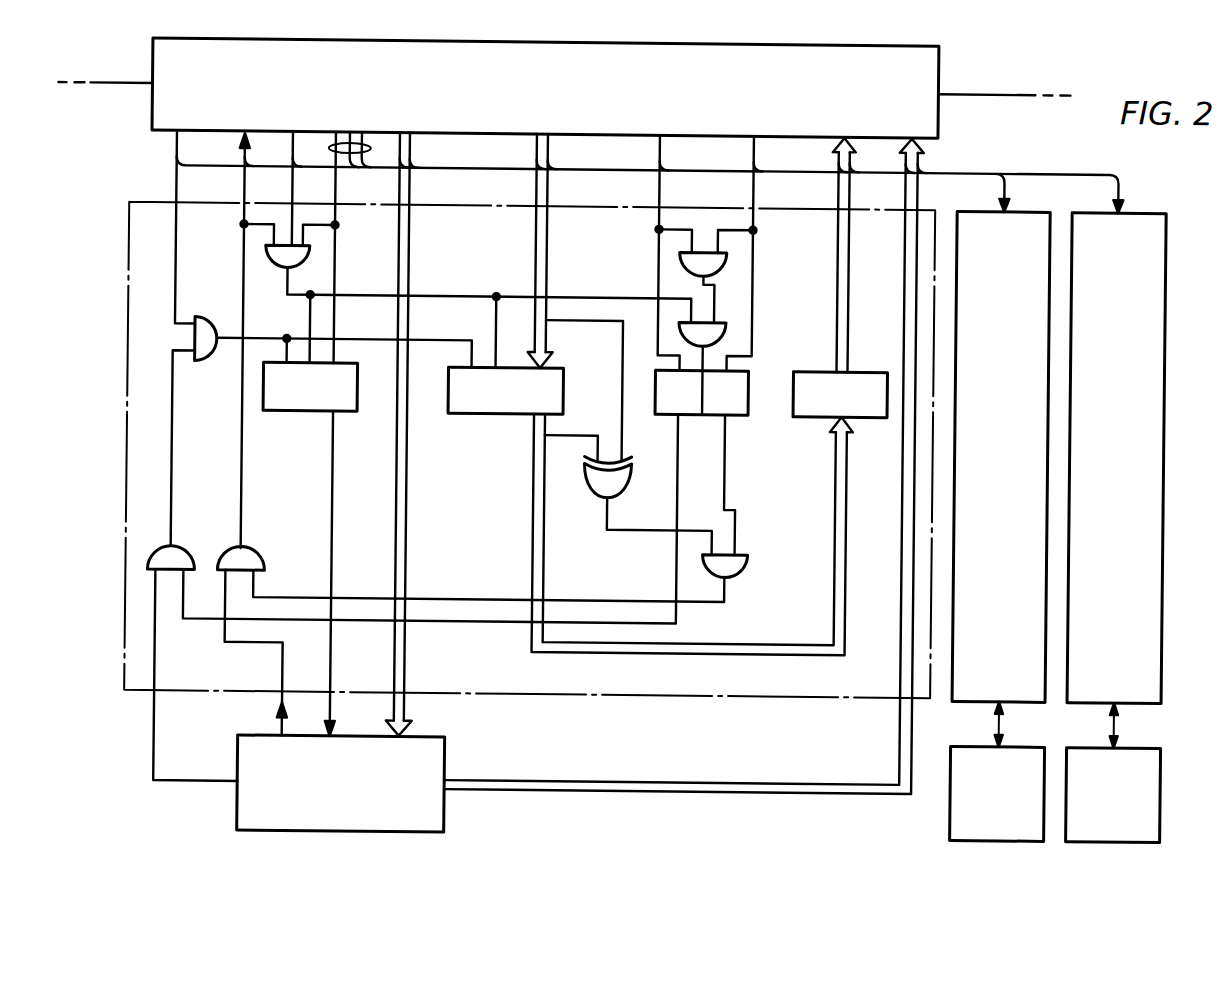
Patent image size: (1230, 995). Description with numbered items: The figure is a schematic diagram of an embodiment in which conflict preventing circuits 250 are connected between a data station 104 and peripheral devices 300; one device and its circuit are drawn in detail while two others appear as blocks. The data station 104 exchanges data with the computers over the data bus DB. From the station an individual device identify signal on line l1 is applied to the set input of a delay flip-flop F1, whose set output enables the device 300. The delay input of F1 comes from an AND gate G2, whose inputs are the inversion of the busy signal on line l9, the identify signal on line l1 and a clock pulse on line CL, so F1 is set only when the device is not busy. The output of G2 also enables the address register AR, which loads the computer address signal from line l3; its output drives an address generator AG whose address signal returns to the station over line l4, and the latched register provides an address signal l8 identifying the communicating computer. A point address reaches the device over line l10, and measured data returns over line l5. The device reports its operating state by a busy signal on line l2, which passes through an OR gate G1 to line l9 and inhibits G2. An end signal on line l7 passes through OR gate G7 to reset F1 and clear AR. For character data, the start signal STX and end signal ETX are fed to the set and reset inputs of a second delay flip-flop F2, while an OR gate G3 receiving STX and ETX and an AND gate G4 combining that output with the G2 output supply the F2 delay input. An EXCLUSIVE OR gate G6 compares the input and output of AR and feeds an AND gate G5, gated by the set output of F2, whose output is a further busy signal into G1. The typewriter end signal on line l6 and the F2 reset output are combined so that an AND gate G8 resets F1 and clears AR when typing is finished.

The data station 104 is at (921, 111).
The data bus DB is at (118, 85).
The conflict preventing circuit 250 is at (645, 453).
The peripheral device 300 is at (699, 789).
The individual device identify signal line l1 is at (345, 165).
The busy signal line l2 is at (250, 643).
The computer address signal line l3 is at (549, 249).
The address signal line l4 is at (852, 249).
The measured data line l5 is at (907, 279).
The end signal line l6 is at (162, 661).
The end signal line l7 is at (178, 249).
The address signal l8 is at (536, 516).
The busy signal line l9 is at (247, 183).
The point address line l10 is at (411, 253).
The clock line CL is at (294, 184).
The end signal ETX is at (658, 183).
The start signal STX is at (755, 184).
The OR gate G1 is at (258, 560).
The AND gate G2 is at (271, 268).
The OR gate G3 is at (724, 257).
The AND gate G4 is at (730, 318).
The AND gate G5 is at (742, 572).
The EXCLUSIVE OR gate G6 is at (617, 486).
The OR gate G7 is at (207, 316).
The AND gate G8 is at (186, 545).
The delay flip-flop F1 is at (277, 410).
The delay flip-flop F2 is at (740, 410).
The address register AR is at (490, 411).
The address generator AG is at (811, 360).